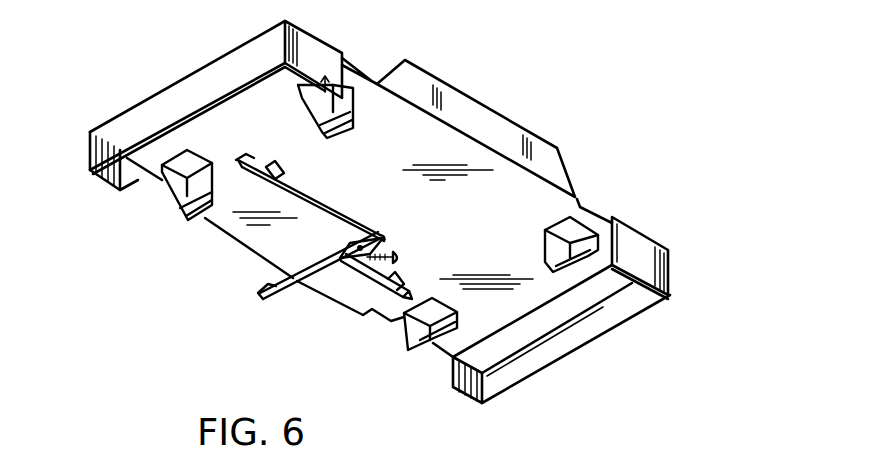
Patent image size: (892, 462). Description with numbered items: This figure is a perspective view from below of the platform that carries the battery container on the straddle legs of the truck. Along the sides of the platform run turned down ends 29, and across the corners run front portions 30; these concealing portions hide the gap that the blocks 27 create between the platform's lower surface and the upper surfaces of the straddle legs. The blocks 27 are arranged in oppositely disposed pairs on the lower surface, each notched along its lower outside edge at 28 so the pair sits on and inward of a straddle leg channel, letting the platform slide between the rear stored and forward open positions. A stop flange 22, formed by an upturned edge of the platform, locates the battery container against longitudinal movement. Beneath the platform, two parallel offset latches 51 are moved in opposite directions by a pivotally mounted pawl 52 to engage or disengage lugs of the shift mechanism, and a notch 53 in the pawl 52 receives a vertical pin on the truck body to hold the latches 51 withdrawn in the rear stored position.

The stop flange 22 is at (477, 112).
The block 27 is at (300, 110).
The notch 28 is at (180, 215).
The turned down end 29 is at (195, 88).
The front portion 30 is at (313, 53).
The latch 51 is at (313, 200).
The pawl 52 is at (274, 286).
The notch 53 is at (300, 284).